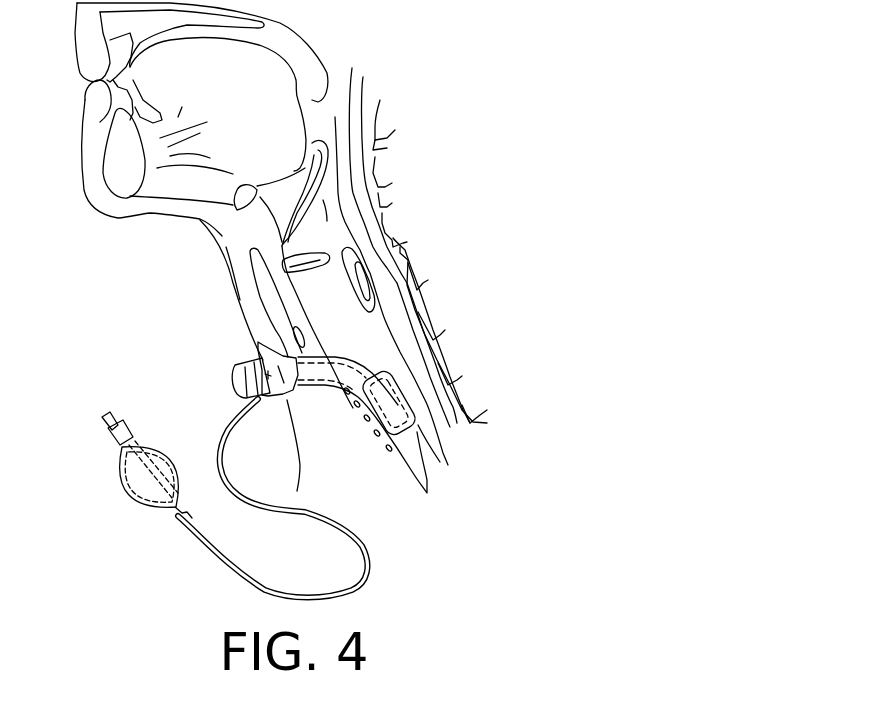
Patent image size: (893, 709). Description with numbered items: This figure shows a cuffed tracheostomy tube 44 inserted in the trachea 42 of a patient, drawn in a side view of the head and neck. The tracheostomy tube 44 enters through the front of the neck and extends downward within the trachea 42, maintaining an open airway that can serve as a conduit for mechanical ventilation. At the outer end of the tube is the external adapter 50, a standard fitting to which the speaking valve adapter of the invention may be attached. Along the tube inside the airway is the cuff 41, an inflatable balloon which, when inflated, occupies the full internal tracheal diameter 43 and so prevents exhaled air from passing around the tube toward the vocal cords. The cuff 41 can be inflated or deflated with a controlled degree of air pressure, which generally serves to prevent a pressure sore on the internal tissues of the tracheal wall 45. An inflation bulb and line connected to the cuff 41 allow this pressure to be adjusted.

The cuff 41 is at (124, 494).
The trachea 42 is at (403, 472).
The internal tracheal diameter 43 is at (433, 450).
The tracheostomy tube 44 is at (348, 345).
The tracheal wall 45 is at (423, 403).
The external adapter 50 is at (230, 370).